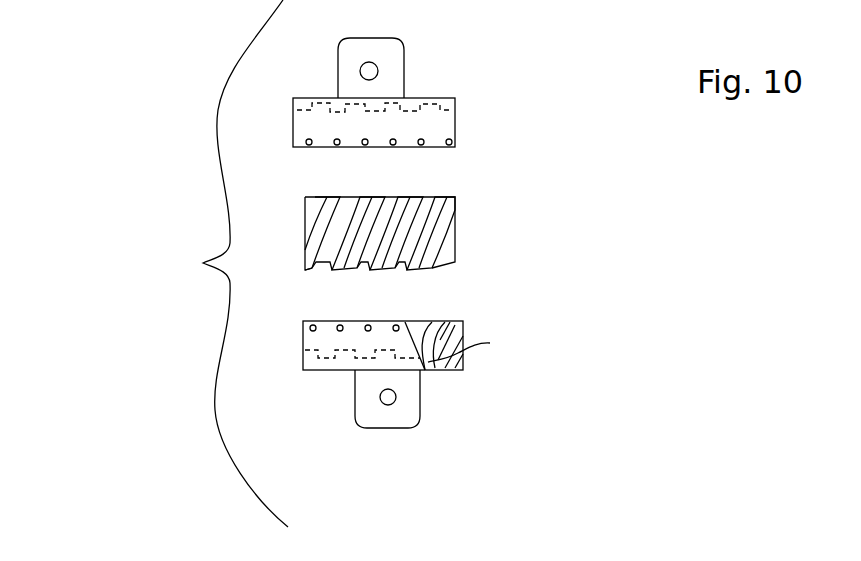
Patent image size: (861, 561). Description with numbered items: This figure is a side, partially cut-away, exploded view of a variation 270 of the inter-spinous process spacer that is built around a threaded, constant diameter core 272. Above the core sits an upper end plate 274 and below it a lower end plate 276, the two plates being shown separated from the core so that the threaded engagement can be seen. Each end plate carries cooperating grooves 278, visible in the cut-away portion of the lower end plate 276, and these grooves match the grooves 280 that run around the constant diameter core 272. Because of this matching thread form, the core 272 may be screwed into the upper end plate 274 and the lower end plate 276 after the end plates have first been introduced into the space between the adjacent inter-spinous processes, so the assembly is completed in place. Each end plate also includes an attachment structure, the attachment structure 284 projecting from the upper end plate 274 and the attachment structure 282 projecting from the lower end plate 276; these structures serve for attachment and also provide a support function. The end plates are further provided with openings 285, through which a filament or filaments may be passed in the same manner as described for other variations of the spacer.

The variation of inter-spinous process spacer 270 is at (177, 242).
The threaded, constant diameter core 272 is at (455, 238).
The upper end plate 274 is at (428, 98).
The lower end plate 276 is at (330, 372).
The cooperating grooves 278 is at (433, 332).
The grooves 280 is at (427, 205).
The attachment structure 282 is at (420, 407).
The attachment structure 284 is at (377, 38).
The openings 285 is at (317, 322).